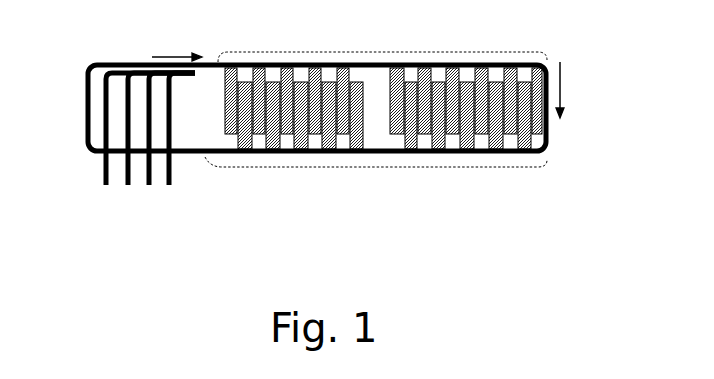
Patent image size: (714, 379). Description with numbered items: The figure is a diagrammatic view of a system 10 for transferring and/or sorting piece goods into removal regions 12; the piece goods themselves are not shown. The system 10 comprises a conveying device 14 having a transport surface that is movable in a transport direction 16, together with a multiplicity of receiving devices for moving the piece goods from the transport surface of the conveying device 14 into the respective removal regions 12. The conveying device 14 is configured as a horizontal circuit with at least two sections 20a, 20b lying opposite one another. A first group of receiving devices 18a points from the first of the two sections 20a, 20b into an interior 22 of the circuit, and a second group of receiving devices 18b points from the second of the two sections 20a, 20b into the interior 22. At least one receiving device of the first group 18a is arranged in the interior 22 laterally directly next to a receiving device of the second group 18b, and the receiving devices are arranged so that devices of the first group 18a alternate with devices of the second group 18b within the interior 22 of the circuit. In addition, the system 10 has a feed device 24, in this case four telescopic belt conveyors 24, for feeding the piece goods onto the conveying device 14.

The system 10 is at (548, 378).
The removal regions 12 is at (332, 71).
The conveying device 14 is at (550, 150).
The transport direction 16 is at (172, 53).
The first group of receiving devices 18a is at (480, 70).
The second group of receiving devices 18b is at (536, 110).
The first section 20a is at (388, 52).
The second section 20b is at (388, 168).
The interior of the circuit 22 is at (209, 121).
The feed device 24 is at (124, 183).